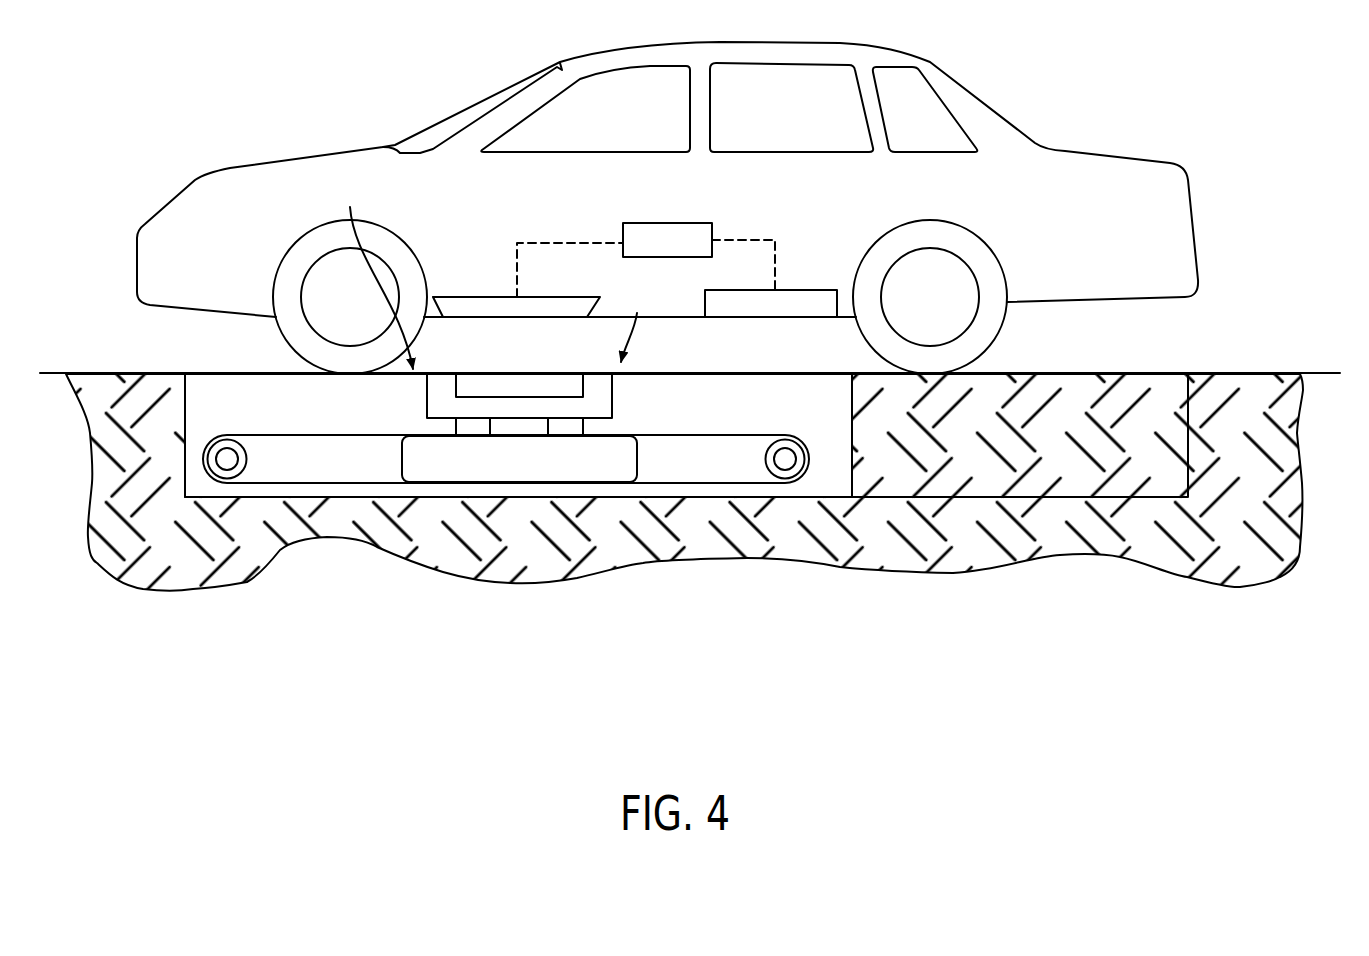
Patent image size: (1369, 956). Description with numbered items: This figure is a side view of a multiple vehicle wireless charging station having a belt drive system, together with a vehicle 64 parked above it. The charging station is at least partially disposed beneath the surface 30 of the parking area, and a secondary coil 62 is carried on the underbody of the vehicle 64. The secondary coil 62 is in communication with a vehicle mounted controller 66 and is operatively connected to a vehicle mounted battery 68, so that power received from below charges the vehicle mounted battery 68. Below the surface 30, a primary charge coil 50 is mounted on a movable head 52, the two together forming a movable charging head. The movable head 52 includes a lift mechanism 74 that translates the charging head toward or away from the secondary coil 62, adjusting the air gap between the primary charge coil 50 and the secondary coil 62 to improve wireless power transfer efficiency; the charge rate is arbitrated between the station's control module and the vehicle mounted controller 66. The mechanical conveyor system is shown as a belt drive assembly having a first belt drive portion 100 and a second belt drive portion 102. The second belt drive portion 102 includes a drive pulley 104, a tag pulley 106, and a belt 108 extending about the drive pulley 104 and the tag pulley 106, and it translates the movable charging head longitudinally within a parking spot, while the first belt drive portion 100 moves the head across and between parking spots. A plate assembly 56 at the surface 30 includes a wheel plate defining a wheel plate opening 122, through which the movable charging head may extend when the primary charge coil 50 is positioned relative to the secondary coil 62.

The surface 30 is at (99, 383).
The primary charge coil 50 is at (457, 375).
The movable head 52 is at (427, 390).
The plate assembly 56 is at (277, 359).
The secondary coil 62 is at (497, 297).
The vehicle 64 is at (316, 126).
The vehicle mounted controller 66 is at (677, 223).
The vehicle mounted battery 68 is at (798, 290).
The lift mechanism 74 is at (583, 432).
The first belt drive portion 100 is at (388, 471).
The second belt drive portion 102 is at (270, 430).
The drive pulley 104 is at (785, 463).
The tag pulley 106 is at (227, 463).
The belt 108 is at (753, 433).
The wheel plate opening 122 is at (495, 272).